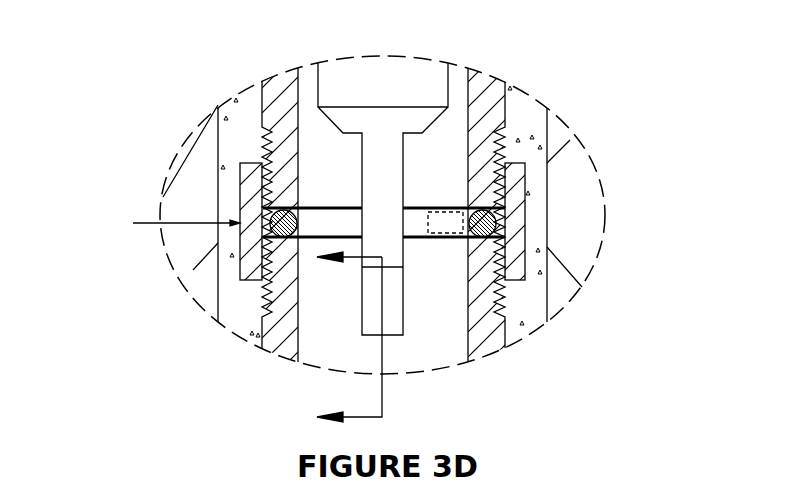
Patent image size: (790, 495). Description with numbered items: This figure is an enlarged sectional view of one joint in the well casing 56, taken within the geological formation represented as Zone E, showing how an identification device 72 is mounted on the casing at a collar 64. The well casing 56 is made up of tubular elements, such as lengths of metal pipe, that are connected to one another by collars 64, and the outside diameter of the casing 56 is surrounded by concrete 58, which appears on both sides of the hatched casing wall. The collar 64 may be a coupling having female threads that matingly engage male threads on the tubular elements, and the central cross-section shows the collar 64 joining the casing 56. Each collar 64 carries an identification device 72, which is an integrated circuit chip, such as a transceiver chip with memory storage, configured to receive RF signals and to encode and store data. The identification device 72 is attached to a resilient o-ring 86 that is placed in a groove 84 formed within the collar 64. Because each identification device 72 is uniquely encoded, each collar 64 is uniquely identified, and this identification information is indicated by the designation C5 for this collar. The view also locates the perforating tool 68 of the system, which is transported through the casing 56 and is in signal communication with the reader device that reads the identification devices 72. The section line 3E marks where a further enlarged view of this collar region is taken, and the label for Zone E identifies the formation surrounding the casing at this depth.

The well casing 56 is at (484, 94).
The concrete 58 is at (520, 302).
The collar 64 is at (525, 225).
The perforating tool 68 is at (347, 77).
The identification device 72 is at (443, 223).
The groove 84 is at (330, 208).
The resilient o-ring 86 is at (313, 228).
The collar identification designation C5 is at (168, 225).
The section line 3E is at (331, 341).
The Zone E is at (187, 246).